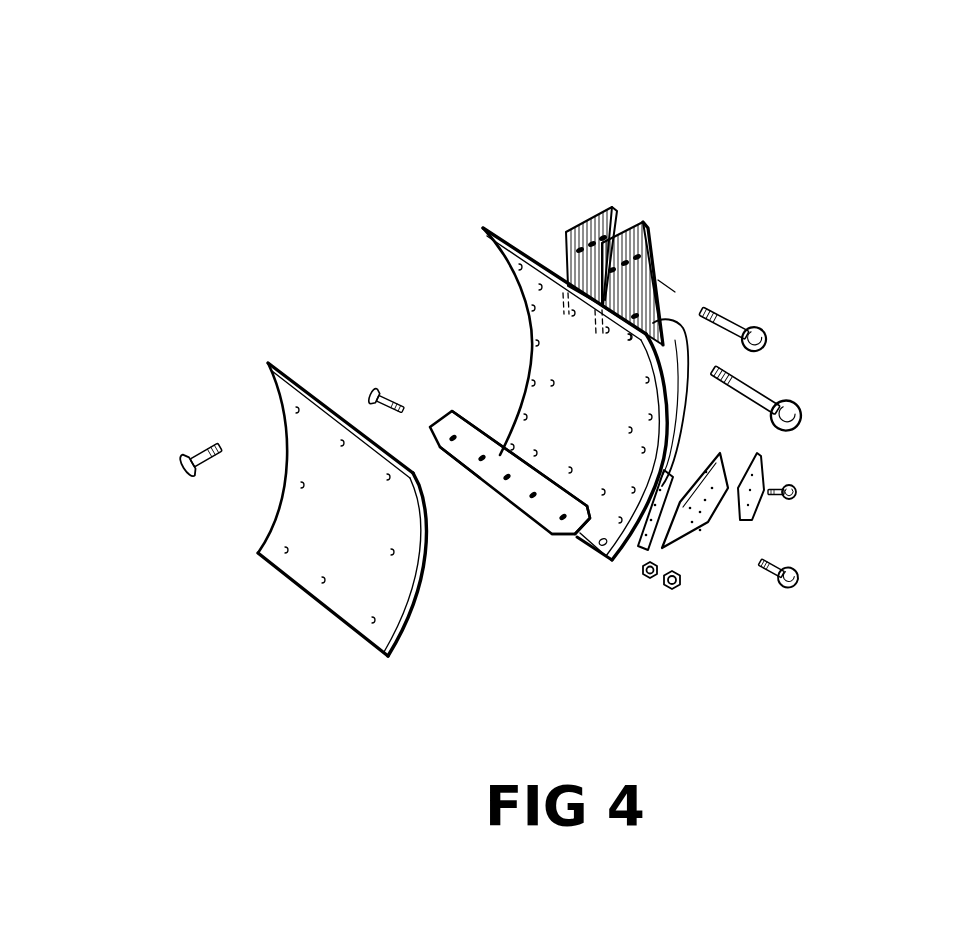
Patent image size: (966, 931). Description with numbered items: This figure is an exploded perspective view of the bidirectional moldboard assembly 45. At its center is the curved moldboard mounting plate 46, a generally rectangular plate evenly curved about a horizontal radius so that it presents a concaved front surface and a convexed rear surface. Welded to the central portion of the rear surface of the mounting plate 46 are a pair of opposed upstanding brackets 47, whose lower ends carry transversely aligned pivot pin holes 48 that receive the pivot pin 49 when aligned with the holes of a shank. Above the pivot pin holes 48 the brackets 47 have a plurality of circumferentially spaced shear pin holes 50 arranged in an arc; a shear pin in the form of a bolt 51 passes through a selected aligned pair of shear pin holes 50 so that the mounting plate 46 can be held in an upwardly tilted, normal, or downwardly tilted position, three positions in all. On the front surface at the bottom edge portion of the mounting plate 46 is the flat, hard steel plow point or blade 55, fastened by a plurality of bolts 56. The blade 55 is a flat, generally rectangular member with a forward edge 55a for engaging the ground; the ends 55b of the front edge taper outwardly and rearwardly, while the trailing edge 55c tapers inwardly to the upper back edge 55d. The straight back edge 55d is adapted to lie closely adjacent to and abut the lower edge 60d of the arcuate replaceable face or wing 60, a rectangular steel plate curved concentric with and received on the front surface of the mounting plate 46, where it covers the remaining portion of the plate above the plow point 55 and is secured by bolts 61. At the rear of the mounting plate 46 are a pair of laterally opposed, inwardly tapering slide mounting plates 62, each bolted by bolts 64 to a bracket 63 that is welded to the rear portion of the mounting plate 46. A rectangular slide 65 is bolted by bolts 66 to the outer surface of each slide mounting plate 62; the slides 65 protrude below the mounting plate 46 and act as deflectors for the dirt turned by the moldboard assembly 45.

The bidirectional moldboard assembly 45 is at (530, 362).
The moldboard mounting plate 46 is at (512, 277).
The upstanding brackets 47 is at (587, 227).
The pivot pin holes 48 is at (658, 313).
The pivot pin 49 is at (770, 390).
The shear pin holes 50 is at (653, 253).
The bolt 51 is at (737, 320).
The plow point or blade 55 is at (528, 512).
The forward edge 55a is at (452, 462).
The ends of the front edge 55b is at (562, 530).
The trailing edge 55c is at (585, 545).
The upper back edge 55d is at (455, 413).
The bolts 56 is at (358, 384).
The replaceable face or wing 60 is at (298, 583).
The lower edge of the wing 60d is at (368, 643).
The bolts 61 is at (193, 453).
The slide mounting plates 62 is at (733, 543).
The brackets 63 is at (640, 552).
The bolts 64 is at (767, 567).
The rectangular slide 65 is at (760, 458).
The bolts 66 is at (797, 493).